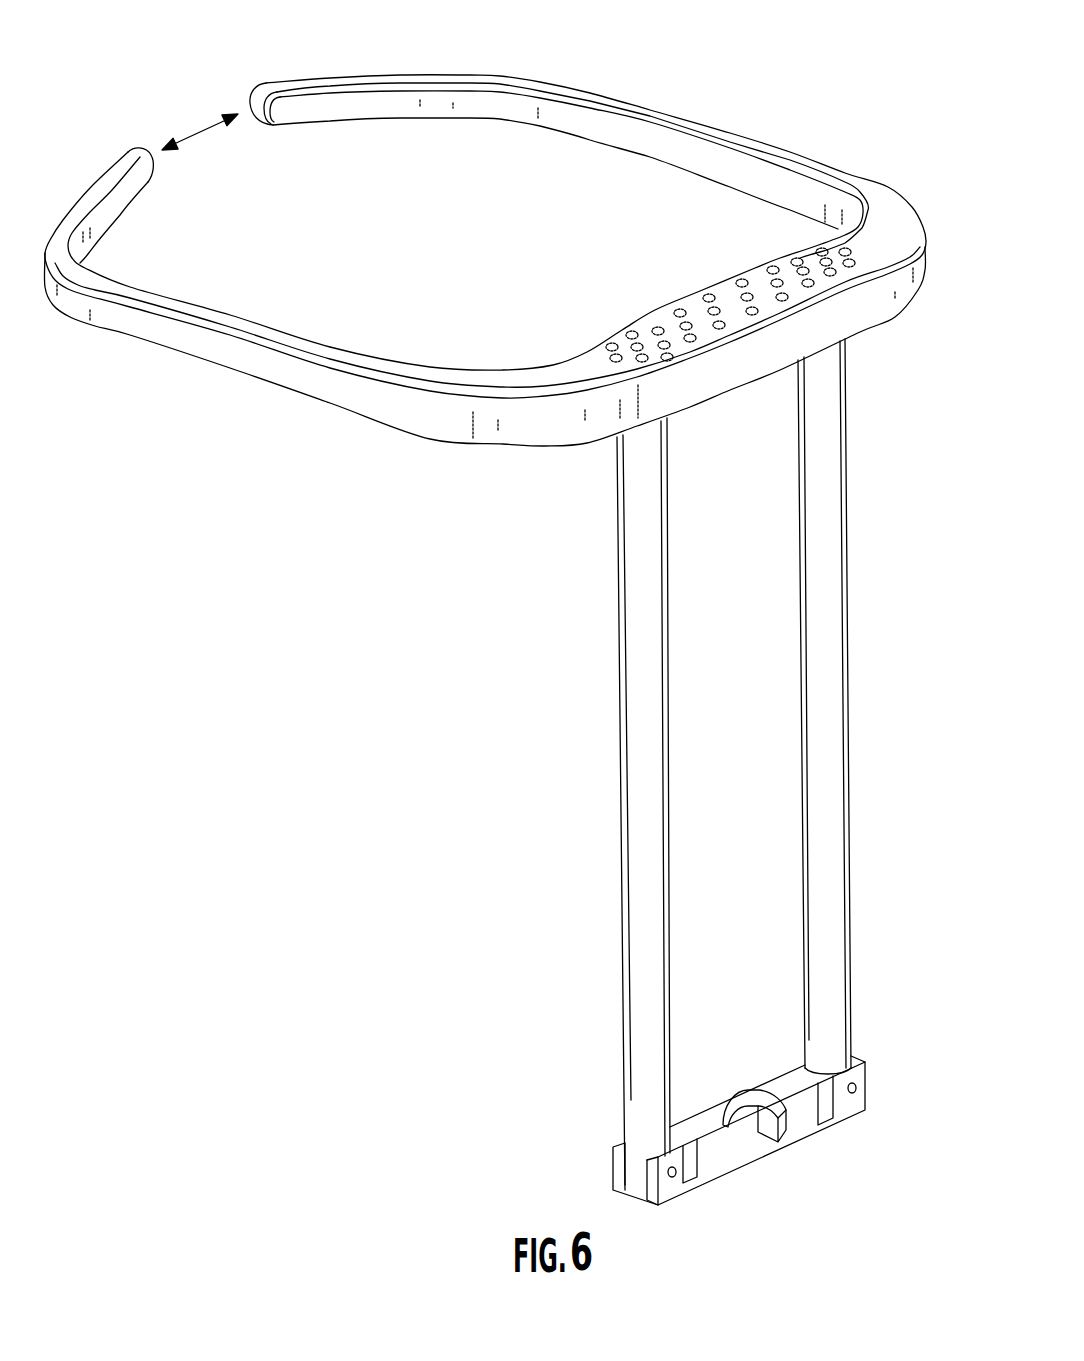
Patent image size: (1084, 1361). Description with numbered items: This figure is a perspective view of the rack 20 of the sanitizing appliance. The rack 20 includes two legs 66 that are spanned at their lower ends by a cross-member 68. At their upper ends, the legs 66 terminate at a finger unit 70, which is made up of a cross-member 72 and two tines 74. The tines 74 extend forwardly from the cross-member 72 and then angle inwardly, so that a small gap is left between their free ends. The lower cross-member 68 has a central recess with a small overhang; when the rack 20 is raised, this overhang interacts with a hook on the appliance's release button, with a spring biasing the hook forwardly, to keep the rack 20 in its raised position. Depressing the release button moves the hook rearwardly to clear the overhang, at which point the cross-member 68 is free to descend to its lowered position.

The rack 20 is at (501, 634).
The legs 66 is at (646, 888).
The cross-member 68 is at (805, 1126).
The finger unit 70 is at (722, 422).
The cross-member 72 is at (692, 320).
The tines 74 is at (658, 118).